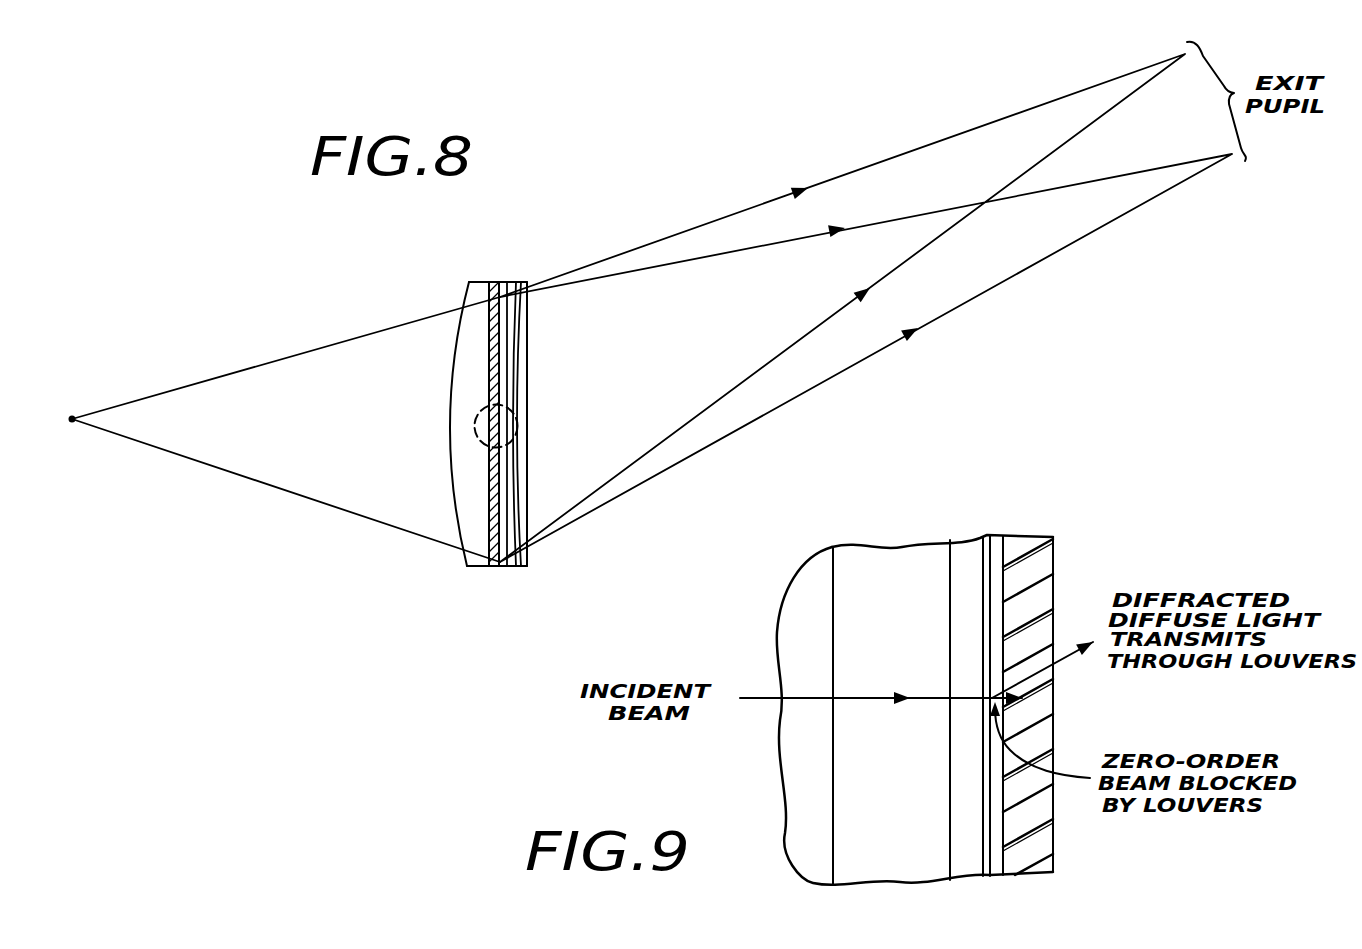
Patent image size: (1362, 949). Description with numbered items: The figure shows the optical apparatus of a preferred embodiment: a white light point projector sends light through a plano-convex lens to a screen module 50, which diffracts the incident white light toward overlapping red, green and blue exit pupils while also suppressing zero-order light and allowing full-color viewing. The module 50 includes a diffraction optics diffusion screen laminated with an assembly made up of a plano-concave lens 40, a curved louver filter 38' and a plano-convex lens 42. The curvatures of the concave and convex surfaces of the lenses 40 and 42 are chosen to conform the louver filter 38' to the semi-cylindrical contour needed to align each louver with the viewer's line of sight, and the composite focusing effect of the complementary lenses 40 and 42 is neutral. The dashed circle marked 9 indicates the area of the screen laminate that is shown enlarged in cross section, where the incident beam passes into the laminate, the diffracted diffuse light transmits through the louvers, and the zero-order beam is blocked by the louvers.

The curved louver filter 38' is at (559, 424).
The plano-convex lens 42 is at (522, 507).
The plano-concave lens 40 is at (511, 568).
The screen module 50 is at (537, 580).
The area indicated by 9 is at (470, 445).